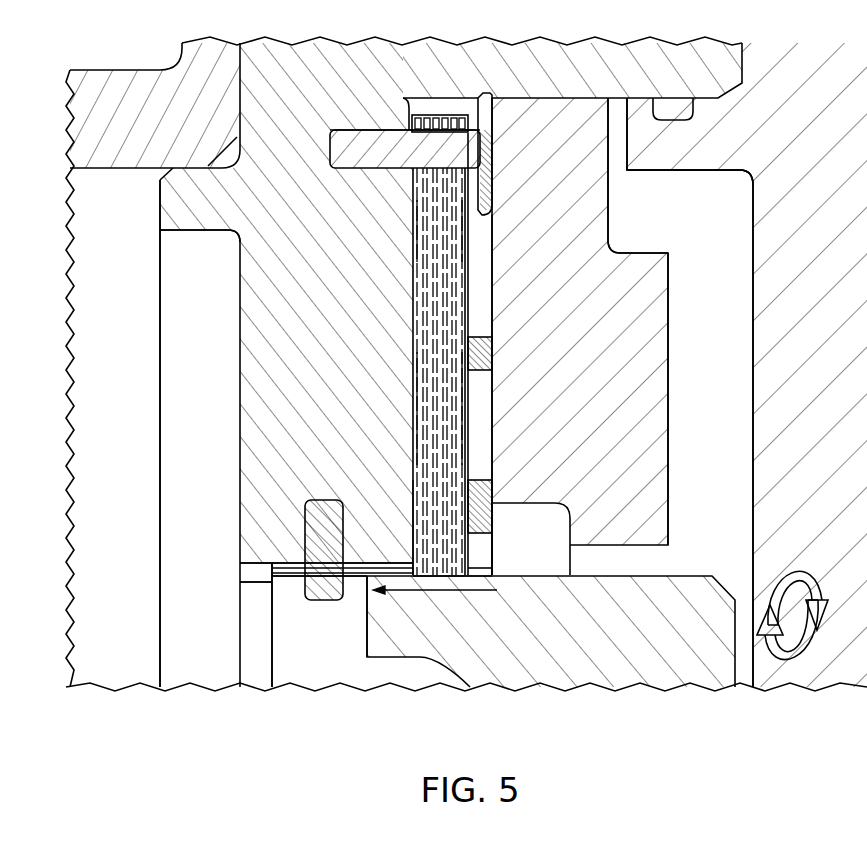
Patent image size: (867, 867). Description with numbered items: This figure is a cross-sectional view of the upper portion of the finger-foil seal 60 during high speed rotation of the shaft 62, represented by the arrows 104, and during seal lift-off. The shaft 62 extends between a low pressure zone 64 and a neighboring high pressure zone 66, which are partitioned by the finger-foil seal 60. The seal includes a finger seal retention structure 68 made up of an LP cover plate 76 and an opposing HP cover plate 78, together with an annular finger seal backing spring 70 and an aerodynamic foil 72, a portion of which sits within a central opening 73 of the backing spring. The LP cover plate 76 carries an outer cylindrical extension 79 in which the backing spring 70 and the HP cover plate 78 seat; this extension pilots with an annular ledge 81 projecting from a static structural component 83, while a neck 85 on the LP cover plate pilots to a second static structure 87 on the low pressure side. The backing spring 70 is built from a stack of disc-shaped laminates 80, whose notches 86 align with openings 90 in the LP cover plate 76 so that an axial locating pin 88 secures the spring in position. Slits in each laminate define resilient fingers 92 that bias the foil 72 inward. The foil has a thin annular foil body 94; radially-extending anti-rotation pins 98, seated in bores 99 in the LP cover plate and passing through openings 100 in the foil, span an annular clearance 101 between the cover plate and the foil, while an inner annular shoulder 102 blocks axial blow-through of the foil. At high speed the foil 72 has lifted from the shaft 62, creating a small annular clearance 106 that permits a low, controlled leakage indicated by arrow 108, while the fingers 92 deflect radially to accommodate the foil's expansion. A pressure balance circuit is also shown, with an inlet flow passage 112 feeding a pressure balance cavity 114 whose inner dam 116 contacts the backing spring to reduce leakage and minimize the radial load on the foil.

The finger-foil seal 60 is at (198, 147).
The shaft 62 is at (585, 644).
The low pressure zone 64 is at (131, 489).
The high pressure zone 66 is at (695, 489).
The finger seal retention structure 68 is at (615, 102).
The finger seal backing spring 70 is at (399, 326).
The aerodynamic foil 72 is at (359, 590).
The central opening 73 is at (465, 577).
The LP cover plate 76 is at (300, 365).
The HP cover plate 78 is at (585, 363).
The outer cylindrical extension 79 is at (560, 84).
The laminate 80 is at (433, 200).
The annular ledge 81 is at (690, 163).
The structural component 83 is at (810, 152).
The annular ledge or neck 85 is at (208, 226).
The notch 86 is at (408, 125).
The second structure 87 is at (98, 72).
The locating pin 88 is at (347, 165).
The opening 90 is at (360, 130).
The finger 92 is at (433, 355).
The annular foil body 94 is at (367, 563).
The anti-rotation pin 98 is at (305, 522).
The bore 99 is at (343, 505).
The opening 100 is at (300, 580).
The annular clearance 101 is at (280, 562).
The annular shoulder 102 is at (247, 568).
The arrows 104 is at (802, 565).
The annular clearance 106 is at (497, 573).
The arrow 108 is at (433, 578).
The inlet flow passage 112 is at (487, 301).
The pressure balance cavity 114 is at (413, 520).
The inner dam 116 is at (393, 591).